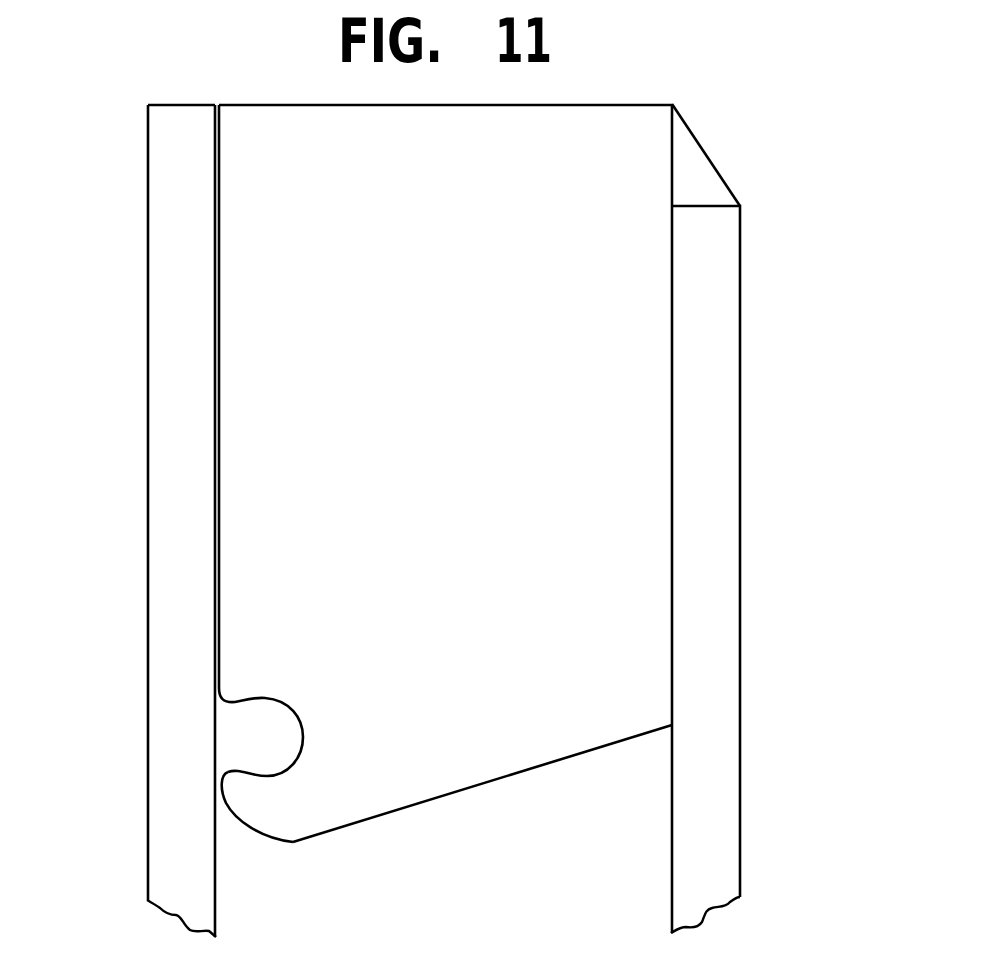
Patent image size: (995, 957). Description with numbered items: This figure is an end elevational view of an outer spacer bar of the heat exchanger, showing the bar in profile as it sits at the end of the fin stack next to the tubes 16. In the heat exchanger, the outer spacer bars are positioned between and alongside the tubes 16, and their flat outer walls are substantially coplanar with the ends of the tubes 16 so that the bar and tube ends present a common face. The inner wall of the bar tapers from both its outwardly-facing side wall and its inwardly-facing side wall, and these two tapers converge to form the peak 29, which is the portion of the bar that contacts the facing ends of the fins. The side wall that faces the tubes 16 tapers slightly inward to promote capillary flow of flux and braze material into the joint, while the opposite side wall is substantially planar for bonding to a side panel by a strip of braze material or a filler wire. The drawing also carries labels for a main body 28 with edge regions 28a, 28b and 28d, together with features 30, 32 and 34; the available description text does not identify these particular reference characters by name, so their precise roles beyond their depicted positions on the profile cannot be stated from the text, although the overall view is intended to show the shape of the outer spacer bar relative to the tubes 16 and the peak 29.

The tubes 16 is at (170, 213).
The panel 28 is at (418, 321).
The right edge of panel 28a is at (672, 462).
The left edge of panel 28b is at (218, 437).
The bottom edge of panel 28d is at (453, 800).
The peak 29 is at (293, 843).
The right side panel 30 is at (721, 315).
The hook loop 32 is at (272, 728).
The fold corner 34 is at (694, 165).